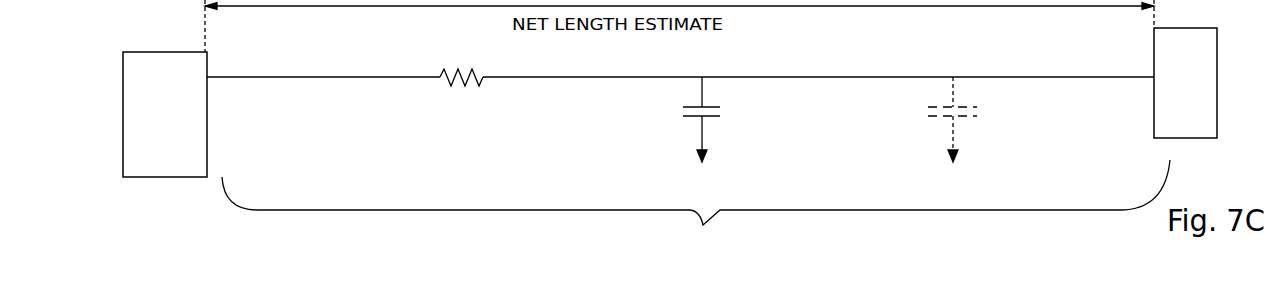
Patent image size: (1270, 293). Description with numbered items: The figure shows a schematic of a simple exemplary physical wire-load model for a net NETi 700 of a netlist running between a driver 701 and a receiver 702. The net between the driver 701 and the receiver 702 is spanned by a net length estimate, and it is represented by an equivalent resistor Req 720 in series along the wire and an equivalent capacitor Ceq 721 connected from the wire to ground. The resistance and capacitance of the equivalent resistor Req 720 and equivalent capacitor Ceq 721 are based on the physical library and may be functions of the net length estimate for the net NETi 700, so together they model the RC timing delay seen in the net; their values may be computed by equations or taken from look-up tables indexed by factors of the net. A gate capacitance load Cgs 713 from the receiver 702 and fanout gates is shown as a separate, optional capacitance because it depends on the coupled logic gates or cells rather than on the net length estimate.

The net NETi 700 is at (688, 161).
The driver 701 is at (123, 68).
The receiver 702 is at (1218, 108).
The equivalent resistor Req 720 is at (463, 107).
The equivalent capacitor Ceq 721 is at (724, 119).
The gate capacitance load Cgs 713 is at (973, 119).